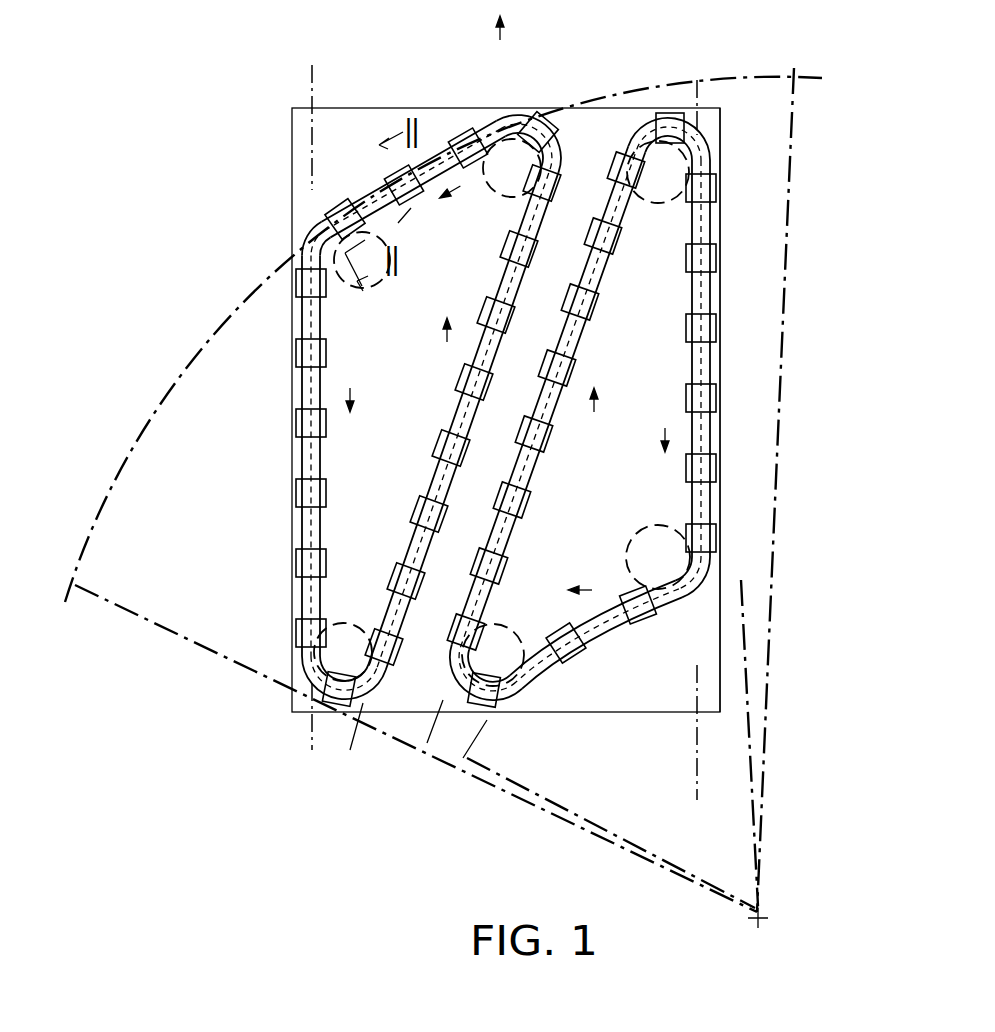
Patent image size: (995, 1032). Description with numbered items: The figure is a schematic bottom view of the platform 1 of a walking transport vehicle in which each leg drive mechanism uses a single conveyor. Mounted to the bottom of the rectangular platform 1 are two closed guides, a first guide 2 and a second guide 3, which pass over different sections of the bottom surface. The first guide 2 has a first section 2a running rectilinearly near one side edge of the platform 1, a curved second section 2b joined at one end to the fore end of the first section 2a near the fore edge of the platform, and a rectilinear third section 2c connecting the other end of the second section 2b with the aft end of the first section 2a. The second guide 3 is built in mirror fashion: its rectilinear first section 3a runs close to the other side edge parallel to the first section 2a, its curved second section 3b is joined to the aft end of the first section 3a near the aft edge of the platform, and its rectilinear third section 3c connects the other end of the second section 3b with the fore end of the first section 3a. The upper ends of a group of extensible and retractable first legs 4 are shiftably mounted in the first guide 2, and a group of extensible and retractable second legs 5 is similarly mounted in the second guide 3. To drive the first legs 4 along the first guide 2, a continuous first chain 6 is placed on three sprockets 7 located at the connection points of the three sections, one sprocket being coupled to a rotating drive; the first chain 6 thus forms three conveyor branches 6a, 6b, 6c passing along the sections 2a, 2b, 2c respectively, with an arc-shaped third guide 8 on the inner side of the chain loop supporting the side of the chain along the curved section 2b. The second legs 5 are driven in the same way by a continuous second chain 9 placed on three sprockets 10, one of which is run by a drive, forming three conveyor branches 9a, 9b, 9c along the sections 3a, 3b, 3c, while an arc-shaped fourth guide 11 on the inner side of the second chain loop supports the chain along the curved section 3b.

The platform 1 is at (353, 128).
The first guide 2 is at (354, 370).
The first section of the first guide 2a is at (302, 313).
The second section of the first guide 2b is at (360, 203).
The third section of the first guide 2c is at (433, 470).
The second guide 3 is at (658, 368).
The first section of the second guide 3a is at (708, 423).
The second section of the second guide 3b is at (605, 632).
The third section of the second guide 3c is at (600, 262).
The first legs 4 is at (298, 418).
The second legs 5 is at (720, 253).
The first chain 6 is at (548, 142).
The first conveyor branch of the first chain 6a is at (180, 384).
The second conveyor branch of the first chain 6b is at (385, 190).
The third conveyor branch of the first chain 6c is at (413, 530).
The sprockets 7 is at (332, 262).
The third guide 8 is at (427, 112).
The second chain 9 is at (697, 153).
The first conveyor branch of the second chain 9a is at (697, 498).
The second conveyor branch of the second chain 9b is at (585, 641).
The third conveyor branch of the second chain 9c is at (585, 343).
The sprockets 10 is at (680, 162).
The fourth guide 11 is at (665, 603).